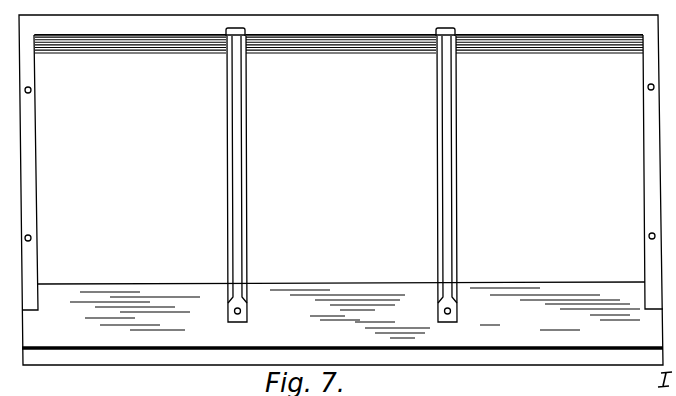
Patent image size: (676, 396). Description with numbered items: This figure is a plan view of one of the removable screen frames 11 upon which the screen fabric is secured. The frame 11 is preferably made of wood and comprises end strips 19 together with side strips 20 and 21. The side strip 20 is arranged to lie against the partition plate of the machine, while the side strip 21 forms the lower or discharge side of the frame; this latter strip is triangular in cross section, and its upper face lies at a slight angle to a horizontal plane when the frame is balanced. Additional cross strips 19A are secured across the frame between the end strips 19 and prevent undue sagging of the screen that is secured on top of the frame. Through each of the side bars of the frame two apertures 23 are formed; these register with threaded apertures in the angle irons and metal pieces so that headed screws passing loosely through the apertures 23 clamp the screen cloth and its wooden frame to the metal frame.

The frame 11 is at (340, 168).
The end strips 19 is at (33, 173).
The cross strips 19A is at (232, 168).
The side strip 20 is at (371, 53).
The side strip 21 is at (351, 290).
The apertures 23 is at (32, 90).